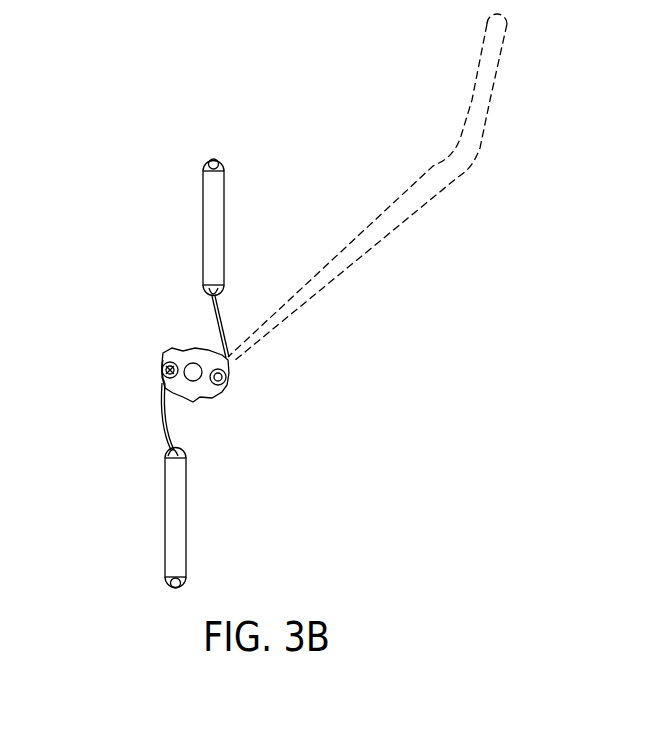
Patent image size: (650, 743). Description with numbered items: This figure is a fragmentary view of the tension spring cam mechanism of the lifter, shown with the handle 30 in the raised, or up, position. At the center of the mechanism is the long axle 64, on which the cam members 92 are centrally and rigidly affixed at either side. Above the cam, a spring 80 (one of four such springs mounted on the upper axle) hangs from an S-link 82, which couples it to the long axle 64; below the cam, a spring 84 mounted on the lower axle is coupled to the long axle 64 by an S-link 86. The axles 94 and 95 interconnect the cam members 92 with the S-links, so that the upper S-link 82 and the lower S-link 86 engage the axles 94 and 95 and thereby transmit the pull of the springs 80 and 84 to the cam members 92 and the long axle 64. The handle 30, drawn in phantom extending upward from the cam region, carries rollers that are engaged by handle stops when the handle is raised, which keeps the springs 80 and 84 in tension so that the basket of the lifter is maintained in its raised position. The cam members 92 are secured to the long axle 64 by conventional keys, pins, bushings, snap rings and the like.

The handle 30 is at (488, 117).
The spring 80 is at (217, 217).
The S-link 82 is at (220, 313).
The long axle 64 is at (229, 361).
The cam member 92 is at (177, 352).
The axle 94 is at (163, 360).
The axle 95 is at (230, 375).
The S-link 86 is at (168, 423).
The spring 84 is at (180, 517).